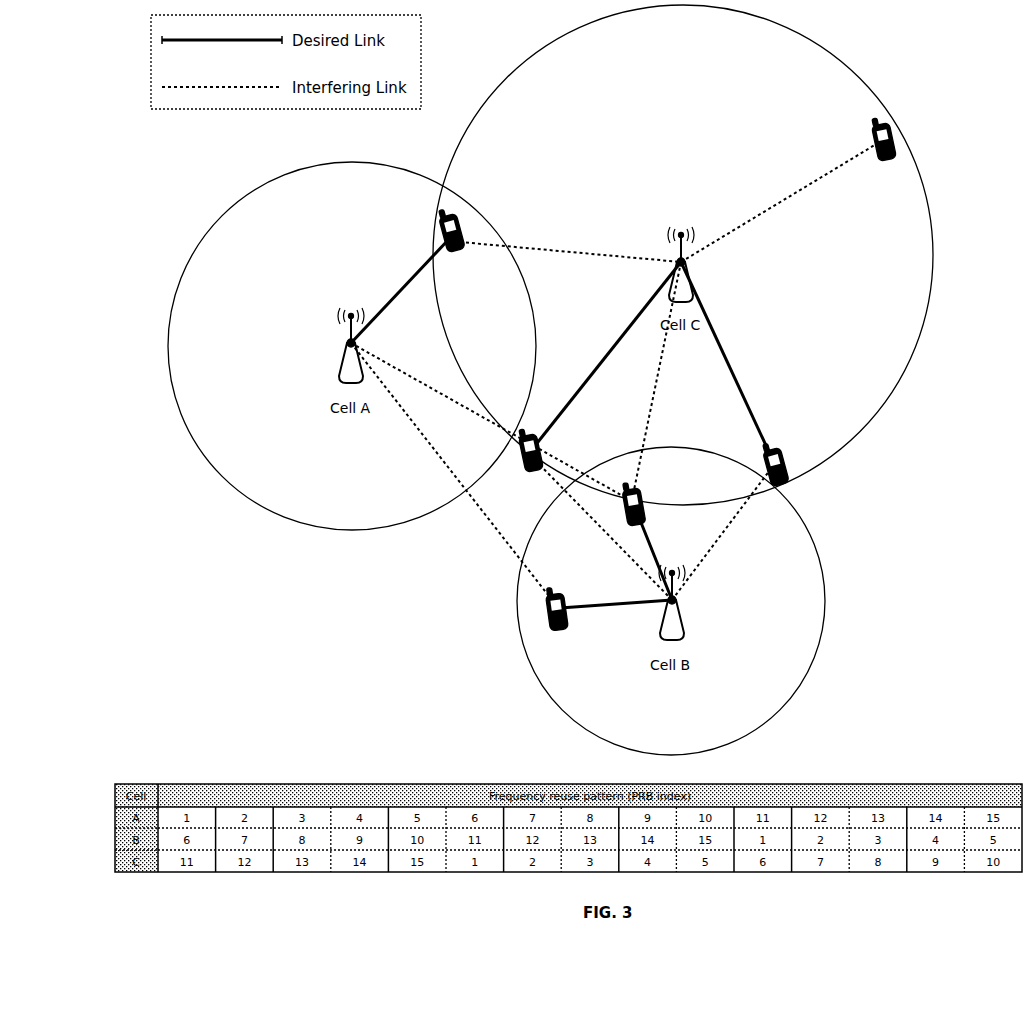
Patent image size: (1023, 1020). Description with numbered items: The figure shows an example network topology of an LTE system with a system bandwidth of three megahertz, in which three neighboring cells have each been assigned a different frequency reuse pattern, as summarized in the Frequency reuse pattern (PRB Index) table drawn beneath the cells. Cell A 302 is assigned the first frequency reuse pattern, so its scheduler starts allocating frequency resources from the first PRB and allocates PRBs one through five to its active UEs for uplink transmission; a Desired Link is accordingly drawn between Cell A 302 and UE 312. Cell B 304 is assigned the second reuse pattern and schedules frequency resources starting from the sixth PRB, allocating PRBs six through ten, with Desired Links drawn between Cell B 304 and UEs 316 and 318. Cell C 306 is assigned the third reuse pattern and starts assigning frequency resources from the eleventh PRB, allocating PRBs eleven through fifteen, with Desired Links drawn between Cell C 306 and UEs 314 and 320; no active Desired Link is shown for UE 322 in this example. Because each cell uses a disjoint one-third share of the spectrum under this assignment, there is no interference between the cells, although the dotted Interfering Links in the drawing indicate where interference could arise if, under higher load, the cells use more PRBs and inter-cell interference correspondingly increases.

The Cell A 302 is at (308, 345).
The Cell B 304 is at (719, 602).
The Cell C 306 is at (708, 252).
The UE 312 is at (408, 230).
The UE 314 is at (515, 470).
The UE 316 is at (513, 608).
The UE 318 is at (608, 481).
The UE 320 is at (809, 592).
The UE 322 is at (840, 139).